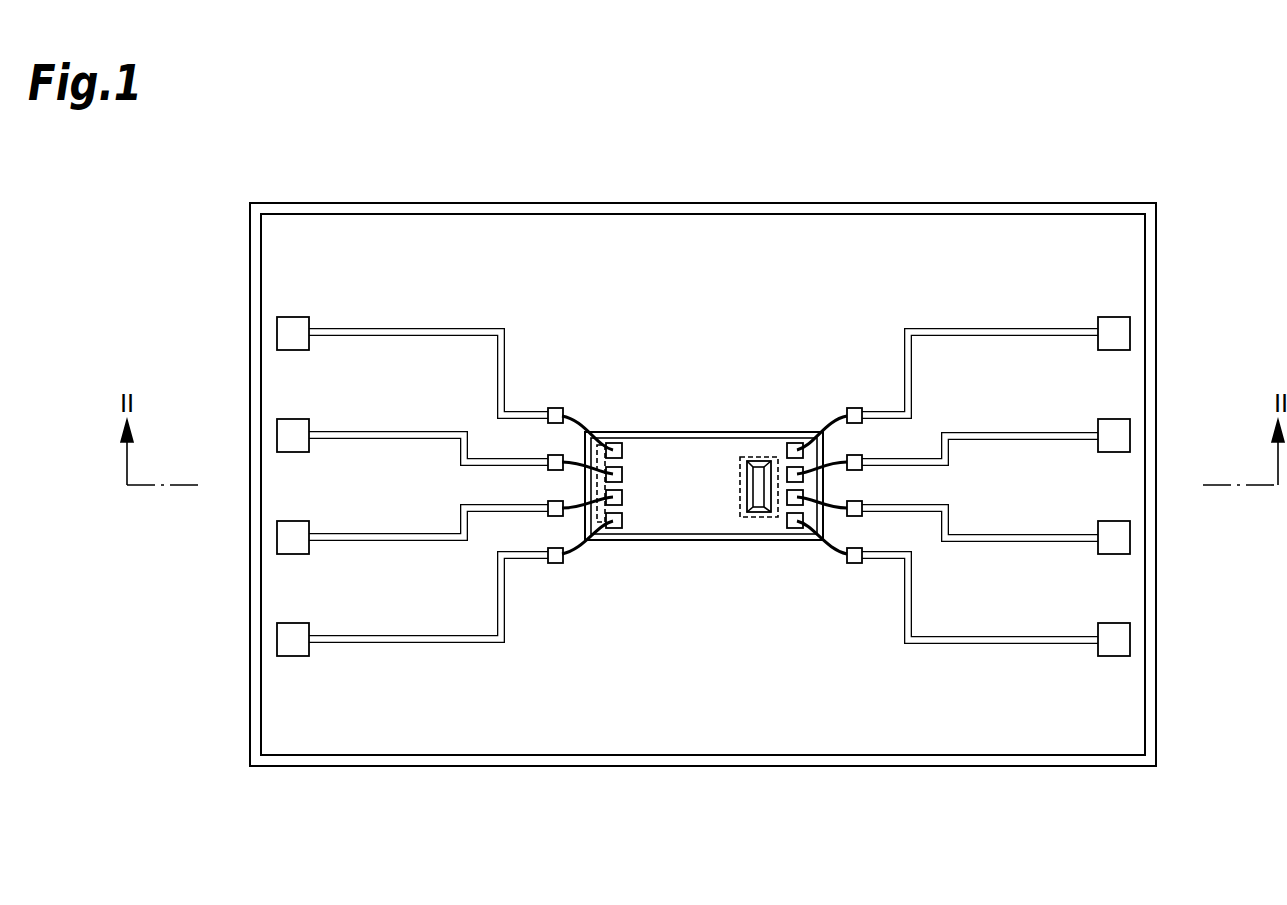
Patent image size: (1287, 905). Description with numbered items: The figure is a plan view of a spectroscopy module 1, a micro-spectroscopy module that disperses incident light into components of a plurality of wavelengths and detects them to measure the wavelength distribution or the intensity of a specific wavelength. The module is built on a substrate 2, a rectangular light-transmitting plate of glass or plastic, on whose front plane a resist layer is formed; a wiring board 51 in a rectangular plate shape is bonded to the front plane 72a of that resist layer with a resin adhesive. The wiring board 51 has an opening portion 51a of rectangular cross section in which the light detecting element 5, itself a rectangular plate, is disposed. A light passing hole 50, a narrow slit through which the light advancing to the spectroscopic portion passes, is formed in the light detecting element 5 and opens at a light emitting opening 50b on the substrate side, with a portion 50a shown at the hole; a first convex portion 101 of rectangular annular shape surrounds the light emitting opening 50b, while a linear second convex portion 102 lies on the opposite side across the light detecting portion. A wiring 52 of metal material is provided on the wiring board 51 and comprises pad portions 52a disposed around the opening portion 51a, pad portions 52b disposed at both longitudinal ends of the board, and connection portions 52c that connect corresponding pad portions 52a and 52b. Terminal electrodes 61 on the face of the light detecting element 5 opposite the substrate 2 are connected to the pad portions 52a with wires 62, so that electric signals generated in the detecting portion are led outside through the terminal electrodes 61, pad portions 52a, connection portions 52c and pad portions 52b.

The spectroscopy module 1 is at (991, 164).
The substrate 2 is at (1157, 715).
The light detecting element 5 is at (697, 486).
The light passing hole 50 is at (757, 461).
The sensor element outer portion 50a is at (766, 505).
The light emitting opening 50b is at (752, 478).
The wiring board 51 is at (313, 232).
The opening portion 51a is at (658, 536).
The wiring 52 is at (366, 431).
The pad portion 52a is at (550, 564).
The pad portion 52b is at (293, 640).
The connection portion 52c is at (377, 643).
The terminal electrode 61 is at (623, 473).
The wire 62 is at (568, 455).
The front plane 72a is at (1053, 758).
The first convex portion 101 is at (748, 520).
The second convex portion 102 is at (597, 512).